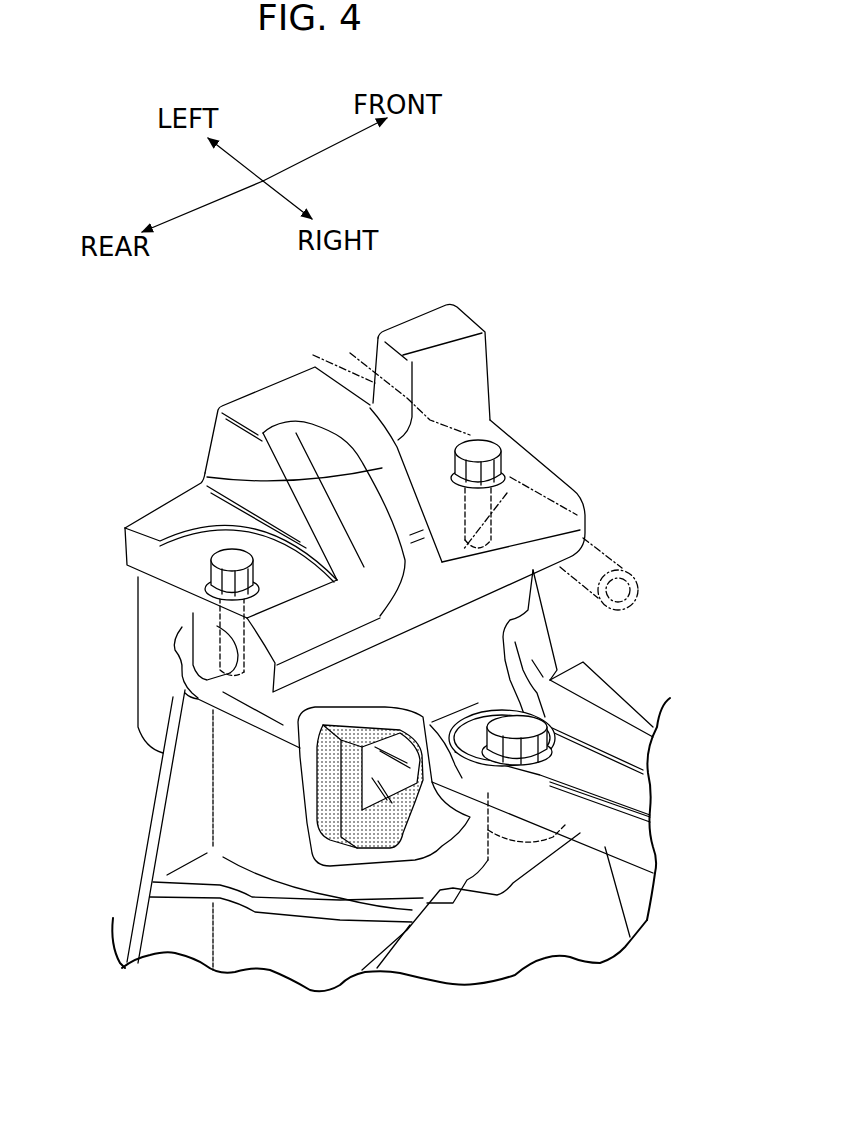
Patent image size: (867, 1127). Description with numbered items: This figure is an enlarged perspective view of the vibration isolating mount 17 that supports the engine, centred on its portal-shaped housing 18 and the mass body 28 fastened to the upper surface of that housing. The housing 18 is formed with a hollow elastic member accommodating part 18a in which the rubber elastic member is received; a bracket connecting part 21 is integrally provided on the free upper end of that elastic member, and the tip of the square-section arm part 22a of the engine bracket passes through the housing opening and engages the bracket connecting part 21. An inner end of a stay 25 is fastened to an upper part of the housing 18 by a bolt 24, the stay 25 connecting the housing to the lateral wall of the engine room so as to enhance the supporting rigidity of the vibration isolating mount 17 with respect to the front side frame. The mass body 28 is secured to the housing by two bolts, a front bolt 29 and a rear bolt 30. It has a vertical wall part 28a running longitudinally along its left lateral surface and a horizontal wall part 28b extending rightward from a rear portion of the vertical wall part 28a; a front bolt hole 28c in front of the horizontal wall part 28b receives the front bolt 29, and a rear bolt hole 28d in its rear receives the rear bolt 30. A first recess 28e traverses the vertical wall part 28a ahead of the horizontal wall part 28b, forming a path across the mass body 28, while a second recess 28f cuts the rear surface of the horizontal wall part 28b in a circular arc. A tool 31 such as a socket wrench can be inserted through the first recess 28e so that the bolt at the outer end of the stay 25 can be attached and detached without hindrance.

The vibration isolating mount 17 is at (562, 638).
The housing 18 is at (143, 835).
The elastic member accommodating part 18a is at (237, 778).
The bracket connecting part 21 is at (353, 817).
The arm part 22a is at (418, 785).
The bolt 24 is at (545, 715).
The stay 25 is at (617, 777).
The mass body 28 is at (495, 392).
The vertical wall part 28a is at (467, 363).
The horizontal wall part 28b is at (207, 477).
The front bolt hole 28c is at (507, 493).
The rear bolt hole 28d is at (217, 641).
The first recess 28e is at (378, 370).
The second recess 28f is at (378, 582).
The front bolt 29 is at (487, 448).
The rear bolt 30 is at (232, 563).
The tool 31 is at (613, 558).